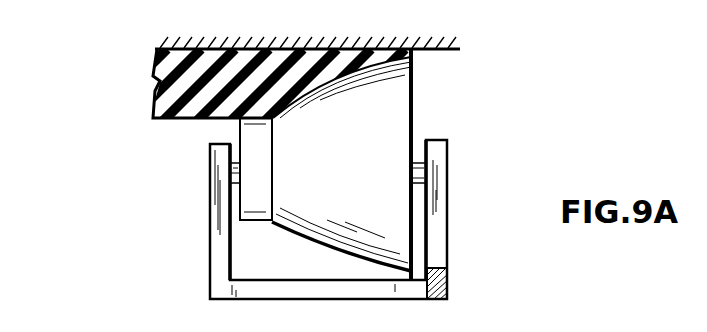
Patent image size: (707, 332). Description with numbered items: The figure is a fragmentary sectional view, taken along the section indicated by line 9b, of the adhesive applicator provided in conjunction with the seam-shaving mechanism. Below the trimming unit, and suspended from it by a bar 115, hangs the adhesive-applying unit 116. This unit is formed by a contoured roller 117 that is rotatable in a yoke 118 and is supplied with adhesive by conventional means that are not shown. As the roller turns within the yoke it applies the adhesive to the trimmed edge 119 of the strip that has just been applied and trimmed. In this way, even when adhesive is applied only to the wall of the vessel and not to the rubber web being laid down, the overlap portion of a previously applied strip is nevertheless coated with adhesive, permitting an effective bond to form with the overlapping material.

The wall section 9b is at (182, 82).
The bar 115 is at (448, 268).
The adhesive-applying unit 116 is at (207, 257).
The contoured roller 117 is at (397, 125).
The yoke 118 is at (220, 200).
The trimmed edge 119 is at (385, 90).